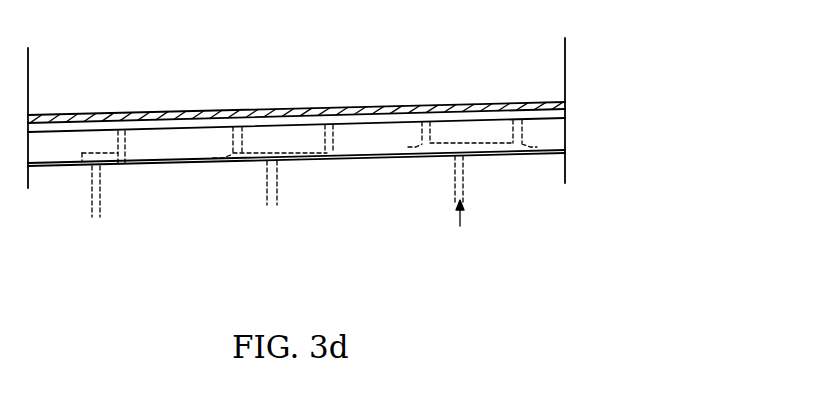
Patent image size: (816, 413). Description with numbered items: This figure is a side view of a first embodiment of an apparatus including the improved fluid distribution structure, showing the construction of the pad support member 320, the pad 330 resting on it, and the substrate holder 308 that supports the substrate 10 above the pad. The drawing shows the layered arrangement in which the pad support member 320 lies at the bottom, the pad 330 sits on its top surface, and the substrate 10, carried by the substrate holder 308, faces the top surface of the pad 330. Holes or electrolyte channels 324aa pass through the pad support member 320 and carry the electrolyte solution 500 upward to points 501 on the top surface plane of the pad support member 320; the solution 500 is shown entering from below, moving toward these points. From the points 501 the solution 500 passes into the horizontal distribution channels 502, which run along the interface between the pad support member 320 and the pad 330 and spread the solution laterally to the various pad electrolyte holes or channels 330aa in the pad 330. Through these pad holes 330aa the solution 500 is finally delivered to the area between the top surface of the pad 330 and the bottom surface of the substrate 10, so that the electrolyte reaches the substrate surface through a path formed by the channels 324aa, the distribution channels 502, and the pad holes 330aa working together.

The substrate holder 308 is at (553, 57).
The substrate 10 is at (566, 108).
The pad 330 is at (557, 135).
The pad support member 320 is at (545, 180).
The pad electrolyte holes 330aa is at (122, 142).
The horizontal distribution channels 502 is at (297, 155).
The points on the top surface plane of the pad support member 501 is at (462, 157).
The electrolyte solution 500 is at (483, 222).
The electrolyte channels 324aa is at (105, 202).